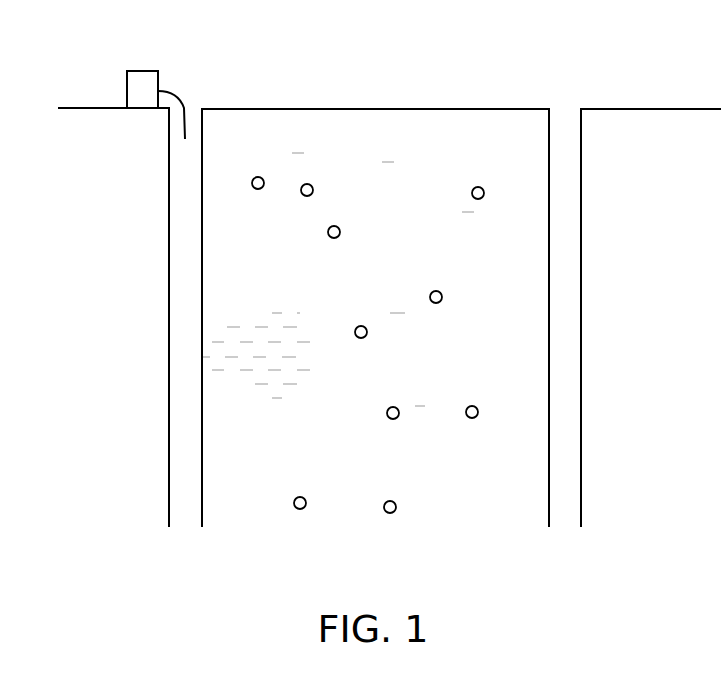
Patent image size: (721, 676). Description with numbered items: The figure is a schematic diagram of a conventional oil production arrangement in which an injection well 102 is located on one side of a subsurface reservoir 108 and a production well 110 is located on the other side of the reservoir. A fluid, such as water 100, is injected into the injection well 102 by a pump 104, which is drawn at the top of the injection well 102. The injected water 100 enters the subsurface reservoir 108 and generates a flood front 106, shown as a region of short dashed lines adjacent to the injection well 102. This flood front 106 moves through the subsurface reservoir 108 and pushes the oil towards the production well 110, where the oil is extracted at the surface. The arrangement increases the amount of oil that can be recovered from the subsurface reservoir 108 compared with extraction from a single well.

The water 100 is at (260, 327).
The injection well 102 is at (168, 232).
The pump 104 is at (142, 70).
The flood front 106 is at (278, 375).
The subsurface reservoir 108 is at (368, 237).
The production well 110 is at (582, 311).